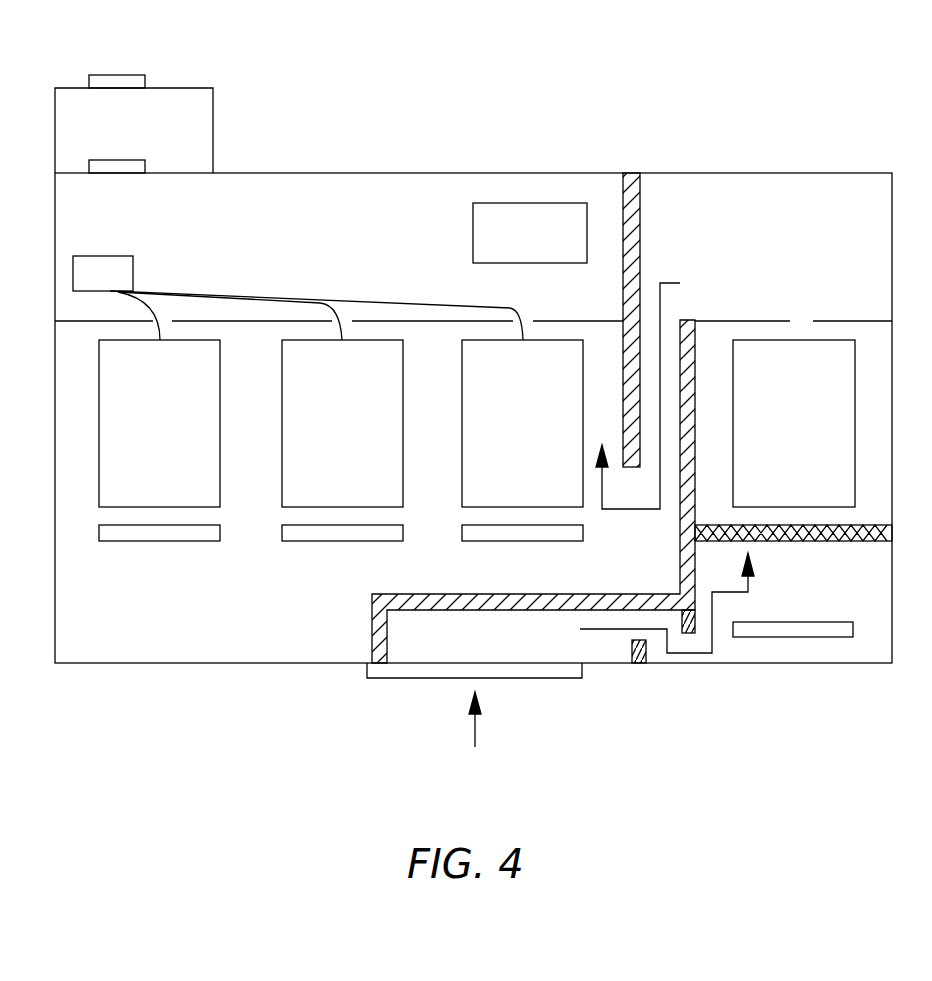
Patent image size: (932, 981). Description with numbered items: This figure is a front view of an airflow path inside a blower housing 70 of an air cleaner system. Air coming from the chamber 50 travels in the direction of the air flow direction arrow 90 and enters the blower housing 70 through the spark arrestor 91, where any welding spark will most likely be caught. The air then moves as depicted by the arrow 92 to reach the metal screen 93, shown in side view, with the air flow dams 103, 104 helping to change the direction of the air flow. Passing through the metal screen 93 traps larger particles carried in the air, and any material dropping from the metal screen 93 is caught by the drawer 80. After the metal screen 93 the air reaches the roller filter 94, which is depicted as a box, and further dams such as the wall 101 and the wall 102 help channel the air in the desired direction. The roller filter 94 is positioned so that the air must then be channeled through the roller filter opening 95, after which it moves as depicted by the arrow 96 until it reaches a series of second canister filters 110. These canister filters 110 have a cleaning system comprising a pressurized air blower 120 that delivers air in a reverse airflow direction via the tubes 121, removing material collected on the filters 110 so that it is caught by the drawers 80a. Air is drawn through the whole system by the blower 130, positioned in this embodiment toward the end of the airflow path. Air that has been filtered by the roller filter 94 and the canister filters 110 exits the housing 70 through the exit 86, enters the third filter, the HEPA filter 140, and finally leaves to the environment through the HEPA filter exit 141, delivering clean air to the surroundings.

The chamber 50 is at (493, 415).
The blower housing 70 is at (782, 172).
The drawer 80 is at (826, 624).
The drawers 80a is at (149, 528).
The exit 86 is at (106, 162).
The air flow direction arrow 90 is at (477, 731).
The spark arrestor 91 is at (572, 669).
The arrow 92 is at (580, 629).
The metal screen 93 is at (890, 530).
The roller filter 94 is at (855, 433).
The roller filter opening 95 is at (802, 320).
The arrow 96 is at (670, 283).
The wall 101 is at (690, 320).
The wall 102 is at (626, 173).
The air flow dam 103 is at (639, 665).
The air flow dam 104 is at (684, 634).
The second canister filters 110 is at (176, 494).
The pressurized air blower 120 is at (103, 256).
The tubes 121 is at (181, 297).
The blower 130 is at (480, 231).
The HEPA filter 140 is at (213, 118).
The HEPA filter exit 141 is at (106, 80).